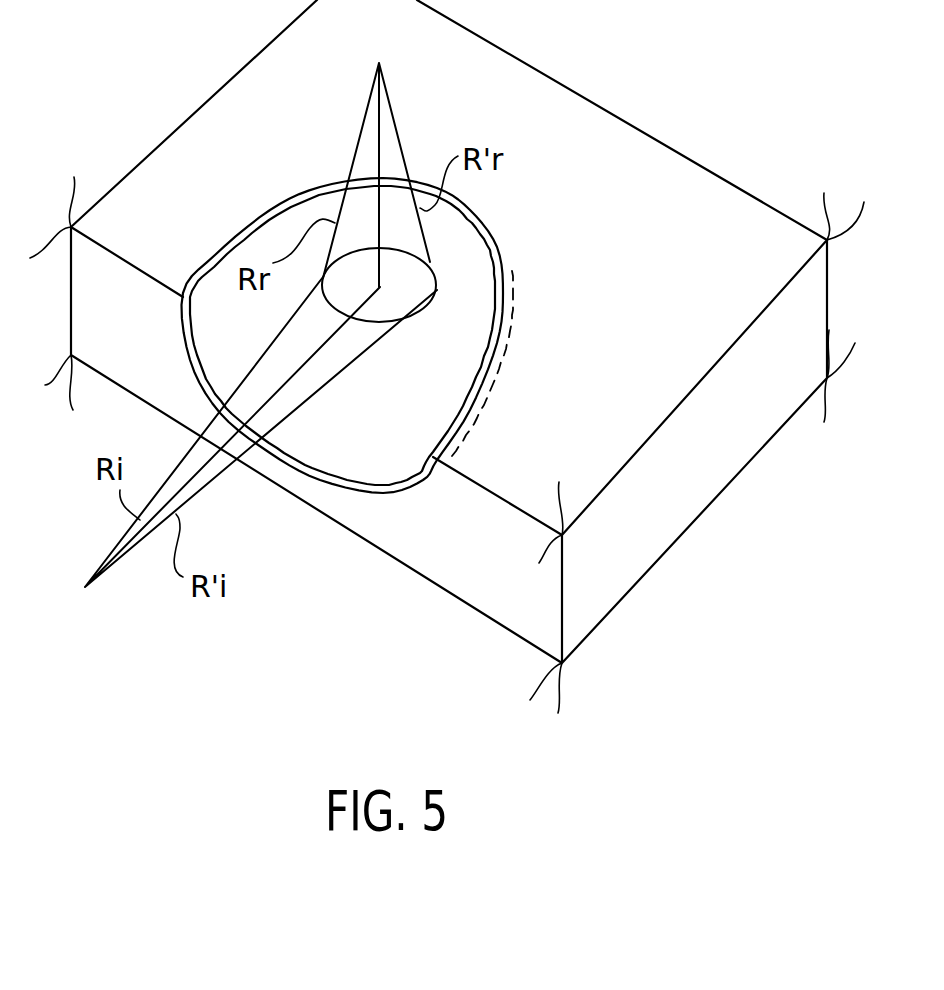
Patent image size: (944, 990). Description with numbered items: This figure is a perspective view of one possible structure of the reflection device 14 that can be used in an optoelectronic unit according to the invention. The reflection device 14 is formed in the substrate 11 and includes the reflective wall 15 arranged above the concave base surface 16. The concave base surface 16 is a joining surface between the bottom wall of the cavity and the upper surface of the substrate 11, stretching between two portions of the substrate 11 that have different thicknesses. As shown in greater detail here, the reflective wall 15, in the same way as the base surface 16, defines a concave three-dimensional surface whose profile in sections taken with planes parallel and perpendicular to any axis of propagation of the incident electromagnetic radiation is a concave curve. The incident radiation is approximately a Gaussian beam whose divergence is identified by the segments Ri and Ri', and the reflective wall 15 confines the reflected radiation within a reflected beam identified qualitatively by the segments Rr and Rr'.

The substrate 11 is at (685, 455).
The reflection device 14 is at (535, 273).
The reflective wall 15 is at (431, 394).
The concave base surface 16 is at (482, 217).